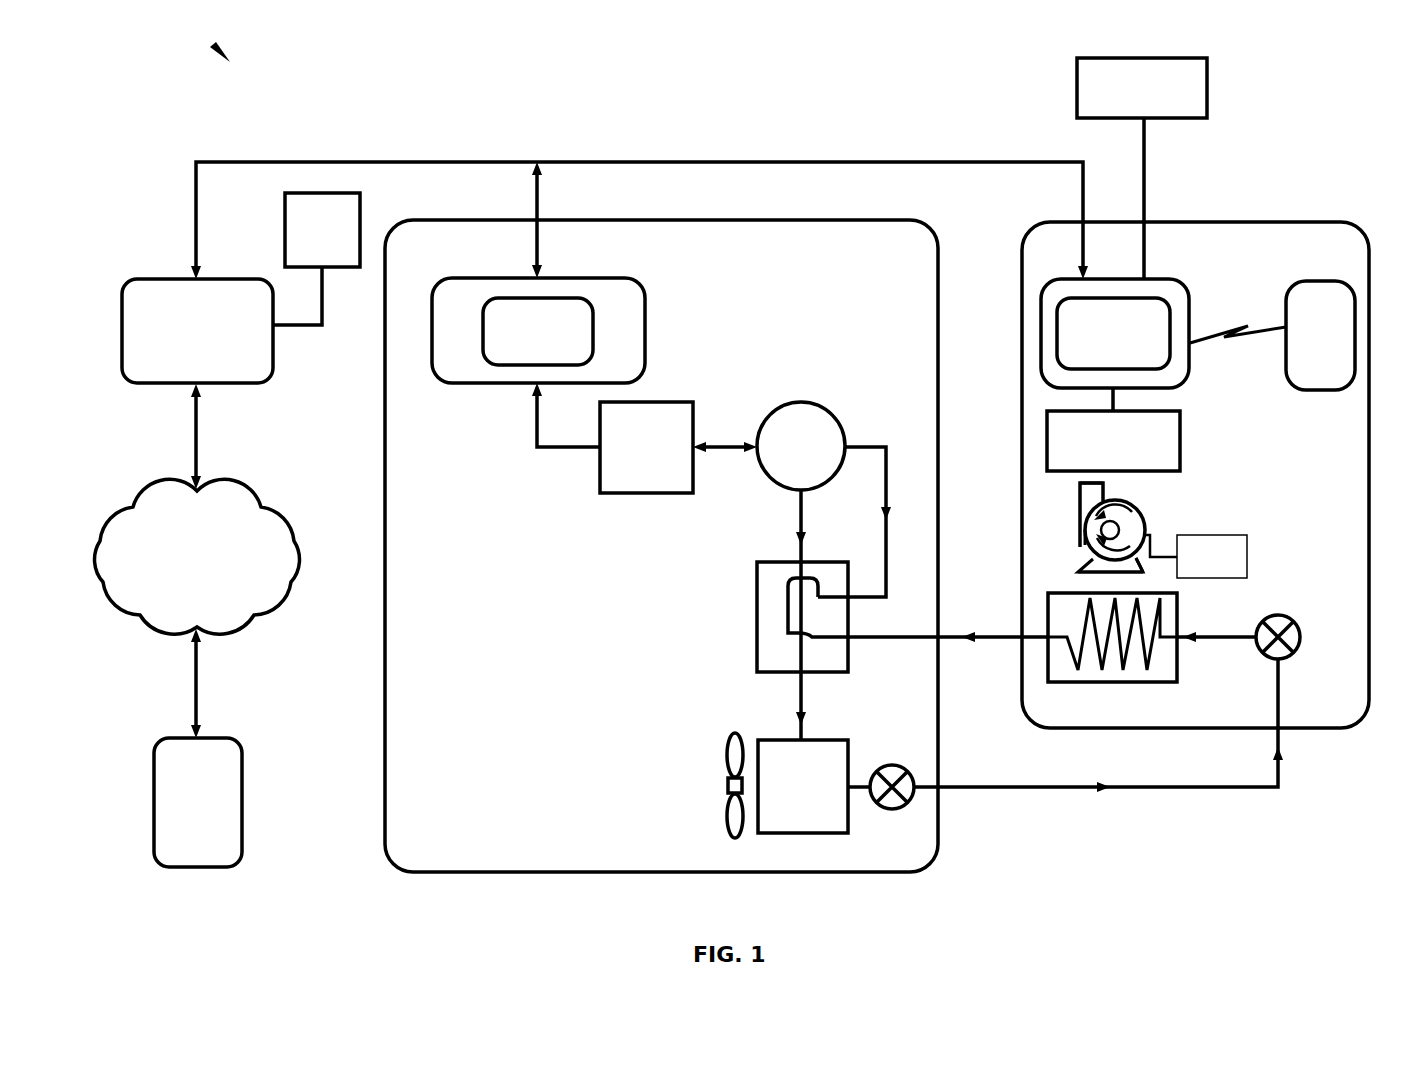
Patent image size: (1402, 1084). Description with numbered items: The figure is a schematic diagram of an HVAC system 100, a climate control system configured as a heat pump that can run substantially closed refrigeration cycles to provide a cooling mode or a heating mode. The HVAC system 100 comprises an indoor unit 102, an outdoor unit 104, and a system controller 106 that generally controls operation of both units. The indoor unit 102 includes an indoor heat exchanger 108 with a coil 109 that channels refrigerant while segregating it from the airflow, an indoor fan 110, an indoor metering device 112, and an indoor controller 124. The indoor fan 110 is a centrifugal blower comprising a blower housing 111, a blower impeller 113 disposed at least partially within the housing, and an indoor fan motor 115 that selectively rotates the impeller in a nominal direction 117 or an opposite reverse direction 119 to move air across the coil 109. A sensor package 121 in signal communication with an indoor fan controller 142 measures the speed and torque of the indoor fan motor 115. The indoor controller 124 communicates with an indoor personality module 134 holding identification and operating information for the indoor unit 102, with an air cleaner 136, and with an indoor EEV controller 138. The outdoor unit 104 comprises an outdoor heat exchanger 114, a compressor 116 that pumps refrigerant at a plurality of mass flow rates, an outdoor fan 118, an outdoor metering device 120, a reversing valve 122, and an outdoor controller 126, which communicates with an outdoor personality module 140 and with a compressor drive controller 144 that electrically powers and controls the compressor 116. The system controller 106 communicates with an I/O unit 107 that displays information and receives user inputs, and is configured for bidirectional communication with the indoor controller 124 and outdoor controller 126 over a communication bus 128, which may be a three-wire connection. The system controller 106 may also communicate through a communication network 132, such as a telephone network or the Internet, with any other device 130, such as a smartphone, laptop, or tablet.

The HVAC system 100 is at (207, 48).
The indoor unit 102 is at (1300, 222).
The outdoor unit 104 is at (798, 220).
The system controller 106 is at (197, 331).
The I/O unit 107 is at (316, 259).
The indoor heat exchanger 108 is at (1108, 684).
The coil 109 is at (1152, 650).
The indoor fan 110 is at (1148, 510).
The blower housing 111 is at (1143, 574).
The indoor metering device 112 is at (1282, 614).
The blower impeller 113 is at (1083, 537).
The outdoor heat exchanger 114 is at (814, 786).
The indoor fan motor 115 is at (1104, 529).
The compressor 116 is at (824, 571).
The nominal direction 117 is at (1090, 572).
The outdoor fan 118 is at (725, 783).
The reverse direction 119 is at (1100, 513).
The outdoor metering device 120 is at (893, 765).
The sensor package 121 is at (1212, 556).
The reversing valve 122 is at (757, 612).
The indoor controller 124 is at (1192, 289).
The outdoor controller 126 is at (648, 316).
The communication bus 128 is at (673, 162).
The other device 130 is at (198, 802).
The communication network 132 is at (197, 561).
The indoor personality module 134 is at (1113, 333).
The air cleaner 136 is at (1142, 168).
The indoor EEV controller 138 is at (1272, 335).
The outdoor personality module 140 is at (538, 331).
The indoor fan controller 142 is at (1113, 429).
The compressor drive controller 144 is at (644, 438).